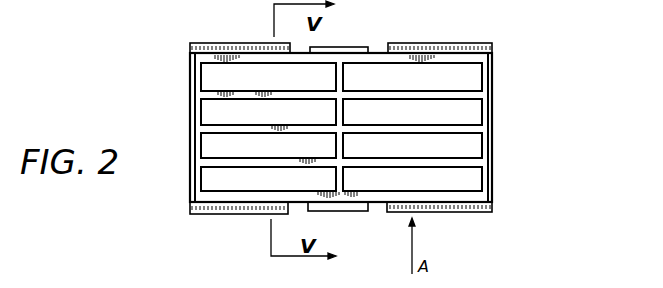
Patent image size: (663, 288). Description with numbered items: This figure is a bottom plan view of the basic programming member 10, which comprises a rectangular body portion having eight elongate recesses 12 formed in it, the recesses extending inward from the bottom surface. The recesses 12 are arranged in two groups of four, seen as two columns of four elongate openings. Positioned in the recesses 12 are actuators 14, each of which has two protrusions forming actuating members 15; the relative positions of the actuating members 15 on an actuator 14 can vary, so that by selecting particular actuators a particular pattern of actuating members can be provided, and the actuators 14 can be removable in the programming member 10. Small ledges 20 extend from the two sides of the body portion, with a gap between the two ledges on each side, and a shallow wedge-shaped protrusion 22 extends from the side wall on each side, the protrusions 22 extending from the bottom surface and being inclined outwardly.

The programming member 10 is at (498, 82).
The elongate recesses 12 is at (207, 115).
The actuators 14 is at (104, 5).
The actuating members 15 is at (196, 0).
The small ledges 20 is at (223, 43).
The wedge-shaped protrusion 22 is at (345, 45).